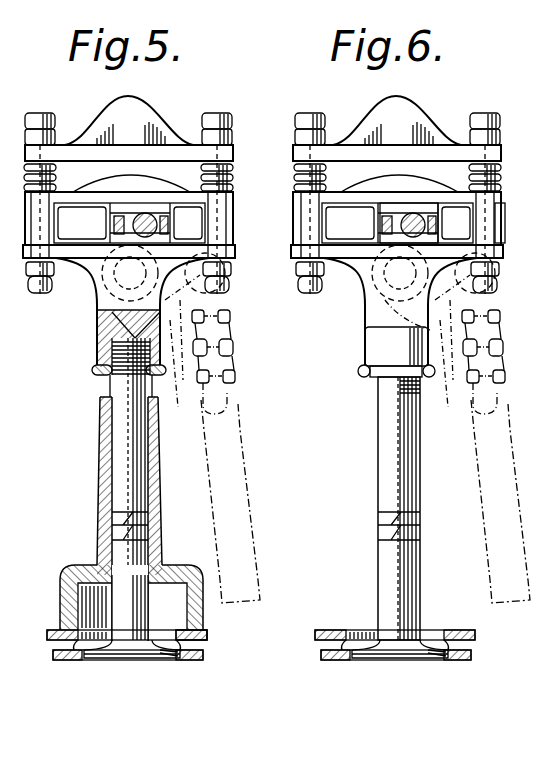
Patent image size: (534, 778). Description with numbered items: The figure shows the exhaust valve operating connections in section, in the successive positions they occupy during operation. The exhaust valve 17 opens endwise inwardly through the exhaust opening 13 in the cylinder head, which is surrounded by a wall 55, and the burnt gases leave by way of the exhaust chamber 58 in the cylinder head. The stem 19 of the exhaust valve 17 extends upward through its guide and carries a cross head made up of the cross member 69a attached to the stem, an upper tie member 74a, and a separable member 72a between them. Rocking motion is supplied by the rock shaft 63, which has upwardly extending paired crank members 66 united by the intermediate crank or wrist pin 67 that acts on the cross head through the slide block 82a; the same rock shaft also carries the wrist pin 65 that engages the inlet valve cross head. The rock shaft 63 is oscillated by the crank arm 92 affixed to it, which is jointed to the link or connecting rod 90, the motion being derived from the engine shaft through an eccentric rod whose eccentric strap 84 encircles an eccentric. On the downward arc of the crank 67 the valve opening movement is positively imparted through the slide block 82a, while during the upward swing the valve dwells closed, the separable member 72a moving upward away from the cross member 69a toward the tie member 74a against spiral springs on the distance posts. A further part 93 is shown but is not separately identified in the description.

In FIG. 5, the upper tie member 74a is at (66, 143).
In FIG. 5, the separable member 72a is at (46, 161).
In FIG. 6, the separable member 72a is at (366, 194).
In FIG. 5, the intermediate crank or wrist pin 67 is at (194, 156).
In FIG. 5, the spring 93 is at (226, 190).
In FIG. 6, the spring 93 is at (503, 192).
In FIG. 5, the paired crank members 66 is at (124, 205).
In FIG. 5, the rock shaft 63 is at (130, 273).
In FIG. 6, the rock shaft 63 is at (400, 273).
In FIG. 5, the cross member 69a is at (78, 263).
In FIG. 5, the crank or wrist pin 65 is at (92, 338).
In FIG. 6, the crank or wrist pin 65 is at (372, 322).
In FIG. 5, the crank arm 92 is at (197, 347).
In FIG. 6, the crank arm 92 is at (457, 372).
In FIG. 5, the link or connecting rod 90 is at (238, 460).
In FIG. 5, the exhaust valve stem 19 is at (120, 452).
In FIG. 6, the exhaust valve stem 19 is at (388, 440).
In FIG. 5, the exhaust chamber 58 is at (72, 593).
In FIG. 5, the exhaust opening 13 is at (50, 645).
In FIG. 6, the exhaust opening 13 is at (395, 645).
In FIG. 5, the wall surrounding the exhaust opening 55 is at (207, 640).
In FIG. 5, the exhaust valve 17 is at (115, 650).
In FIG. 6, the exhaust valve 17 is at (420, 650).
In FIG. 6, the slide block 82a is at (368, 204).
In FIG. 6, the eccentric strap 84 is at (502, 238).